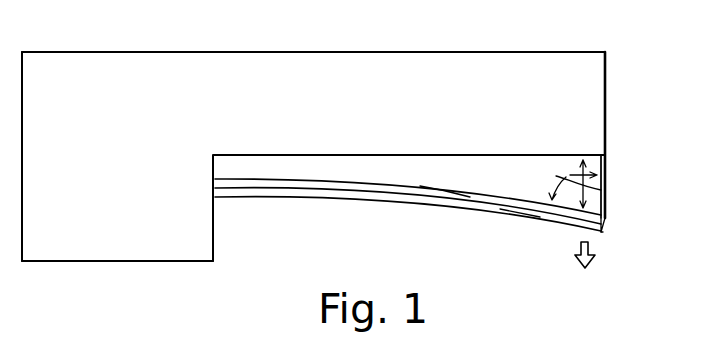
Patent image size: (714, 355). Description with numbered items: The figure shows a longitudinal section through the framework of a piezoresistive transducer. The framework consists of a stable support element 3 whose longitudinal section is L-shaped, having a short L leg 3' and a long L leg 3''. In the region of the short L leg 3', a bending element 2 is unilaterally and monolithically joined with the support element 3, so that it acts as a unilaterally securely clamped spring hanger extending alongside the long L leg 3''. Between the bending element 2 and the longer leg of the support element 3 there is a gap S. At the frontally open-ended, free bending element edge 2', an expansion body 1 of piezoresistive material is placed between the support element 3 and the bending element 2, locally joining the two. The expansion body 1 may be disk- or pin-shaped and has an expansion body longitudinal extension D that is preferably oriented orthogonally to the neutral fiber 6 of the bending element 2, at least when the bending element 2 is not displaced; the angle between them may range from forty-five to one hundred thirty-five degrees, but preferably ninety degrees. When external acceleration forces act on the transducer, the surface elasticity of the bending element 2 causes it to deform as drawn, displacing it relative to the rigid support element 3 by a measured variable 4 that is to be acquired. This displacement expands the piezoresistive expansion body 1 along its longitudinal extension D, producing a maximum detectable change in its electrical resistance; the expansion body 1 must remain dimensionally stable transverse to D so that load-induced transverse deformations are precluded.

The expansion body 1 is at (607, 190).
The bending element 2 is at (410, 209).
The bending element edge 2' is at (617, 254).
The support element 3 is at (313, 156).
The short L leg 3' is at (117, 289).
The long L leg 3'' is at (313, 38).
The measured variable 4 is at (585, 268).
The neutral fiber 6 is at (516, 212).
The gap S is at (431, 168).
The expansion body longitudinal extension D is at (566, 177).